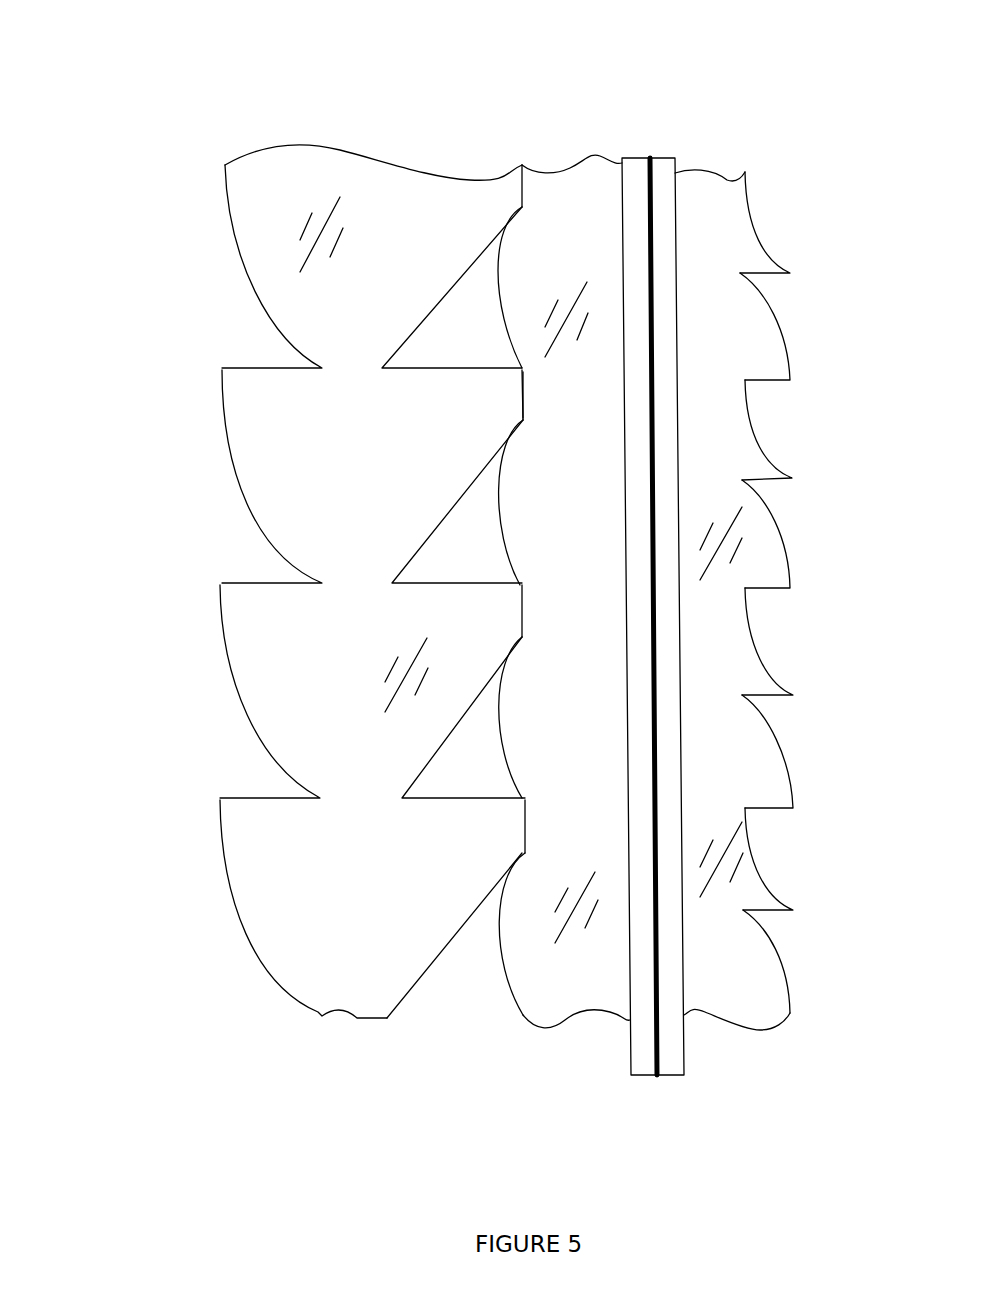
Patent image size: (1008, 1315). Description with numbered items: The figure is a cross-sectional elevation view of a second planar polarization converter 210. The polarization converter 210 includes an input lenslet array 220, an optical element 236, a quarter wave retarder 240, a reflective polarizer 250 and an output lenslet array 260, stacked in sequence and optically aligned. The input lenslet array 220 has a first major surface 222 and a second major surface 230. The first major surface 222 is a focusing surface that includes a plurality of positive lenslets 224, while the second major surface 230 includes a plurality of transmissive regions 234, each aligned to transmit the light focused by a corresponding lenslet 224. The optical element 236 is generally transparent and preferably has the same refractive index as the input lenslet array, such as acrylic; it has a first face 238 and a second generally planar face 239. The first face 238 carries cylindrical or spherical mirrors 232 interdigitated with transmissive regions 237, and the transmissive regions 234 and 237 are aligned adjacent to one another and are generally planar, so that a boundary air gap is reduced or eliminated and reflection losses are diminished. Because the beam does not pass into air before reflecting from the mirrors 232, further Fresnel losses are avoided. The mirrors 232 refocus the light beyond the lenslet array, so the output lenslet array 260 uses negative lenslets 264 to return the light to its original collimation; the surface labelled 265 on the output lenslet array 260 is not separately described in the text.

The polarization converter 210 is at (556, 27).
The input lenslet array 220 is at (328, 594).
The first major surface 222 is at (222, 150).
The positive lenslets 224 is at (200, 468).
The second major surface 230 is at (512, 150).
The mirrors 232 is at (520, 508).
The transmissive regions 234 is at (505, 392).
The optical element 236 is at (542, 594).
The transmissive regions 237 is at (540, 397).
The first face 238 is at (530, 150).
The second face 239 is at (668, 617).
The quarter wave retarder 240 is at (630, 1090).
The reflective polarizer 250 is at (690, 1090).
The output lenslet array 260 is at (802, 649).
The negative lenslets 264 is at (785, 432).
The convex lens surface 265 is at (815, 540).